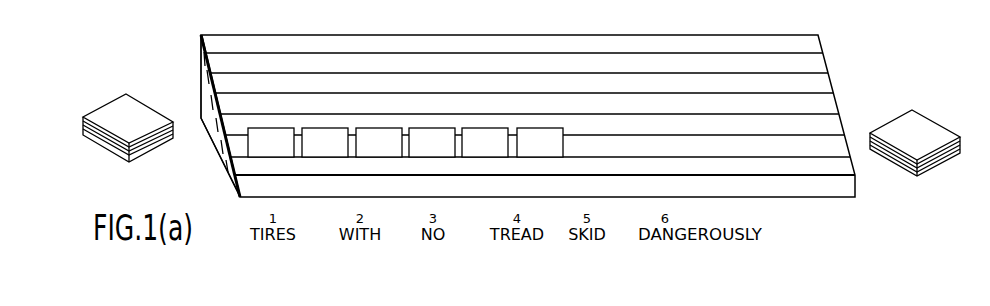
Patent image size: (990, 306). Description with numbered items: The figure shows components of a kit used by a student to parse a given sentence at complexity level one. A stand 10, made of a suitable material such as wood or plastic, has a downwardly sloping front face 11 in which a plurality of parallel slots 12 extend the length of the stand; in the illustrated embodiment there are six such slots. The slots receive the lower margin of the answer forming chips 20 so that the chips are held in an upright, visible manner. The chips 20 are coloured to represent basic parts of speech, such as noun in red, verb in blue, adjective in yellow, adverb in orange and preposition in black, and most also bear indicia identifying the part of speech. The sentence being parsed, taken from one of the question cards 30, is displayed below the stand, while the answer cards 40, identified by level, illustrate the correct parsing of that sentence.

The stand 10 is at (518, 111).
The downwardly sloping front face 11 is at (262, 63).
The parallel slots 12 is at (211, 91).
The answer forming chips 20 is at (247, 135).
The question cards 30 is at (104, 109).
The answer cards 40 is at (937, 121).